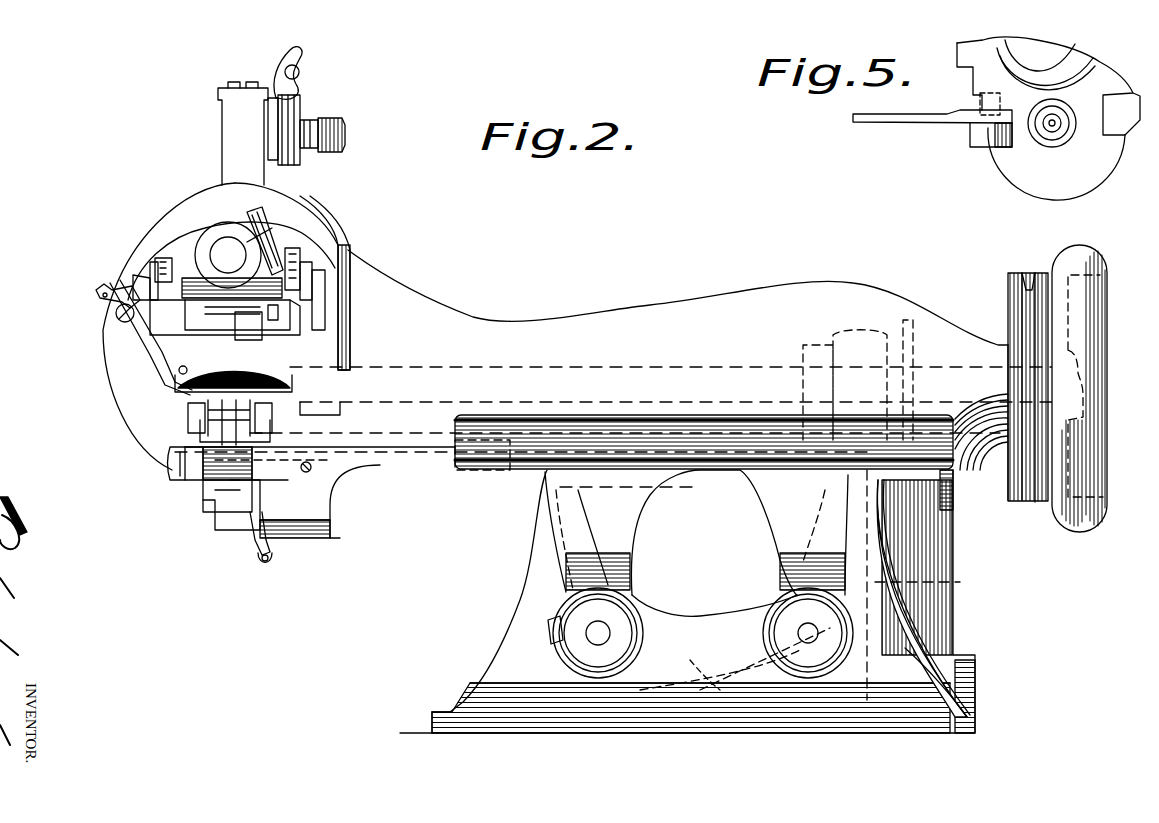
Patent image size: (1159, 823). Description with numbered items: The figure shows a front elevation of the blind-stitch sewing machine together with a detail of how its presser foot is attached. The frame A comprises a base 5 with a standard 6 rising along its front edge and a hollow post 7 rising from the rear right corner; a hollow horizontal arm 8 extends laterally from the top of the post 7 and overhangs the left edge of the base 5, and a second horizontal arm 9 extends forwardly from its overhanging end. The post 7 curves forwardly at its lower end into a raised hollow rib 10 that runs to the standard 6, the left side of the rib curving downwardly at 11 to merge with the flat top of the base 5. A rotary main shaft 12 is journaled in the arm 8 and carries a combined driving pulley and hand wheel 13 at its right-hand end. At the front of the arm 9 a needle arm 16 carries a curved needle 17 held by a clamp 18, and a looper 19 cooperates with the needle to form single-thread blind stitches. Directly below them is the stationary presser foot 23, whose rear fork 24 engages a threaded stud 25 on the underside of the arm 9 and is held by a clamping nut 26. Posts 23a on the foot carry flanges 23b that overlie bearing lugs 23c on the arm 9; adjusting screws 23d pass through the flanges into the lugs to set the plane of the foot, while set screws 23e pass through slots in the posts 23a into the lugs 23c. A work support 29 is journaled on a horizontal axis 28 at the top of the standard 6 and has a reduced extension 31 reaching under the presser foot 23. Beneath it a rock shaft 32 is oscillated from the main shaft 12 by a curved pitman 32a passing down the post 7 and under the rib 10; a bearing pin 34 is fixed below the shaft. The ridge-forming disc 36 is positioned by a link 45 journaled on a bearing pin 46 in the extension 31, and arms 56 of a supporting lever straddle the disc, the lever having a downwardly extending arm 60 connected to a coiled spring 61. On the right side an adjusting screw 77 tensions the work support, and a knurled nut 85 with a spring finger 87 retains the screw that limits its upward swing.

In FIG. 2, the frame A is at (746, 316).
In FIG. 2, the base 5 is at (442, 714).
In FIG. 2, the standard 6 is at (534, 562).
In FIG. 2, the post 7 is at (945, 548).
In FIG. 2, the horizontal arm 8 is at (612, 318).
In FIG. 2, the horizontal arm 9 is at (298, 222).
In FIG. 5, the horizontal arm 9 is at (1106, 56).
In FIG. 2, the rib like structure 10 is at (928, 634).
In FIG. 2, the downwardly curved side of rib 11 is at (720, 688).
In FIG. 2, the rotary main shaft 12 is at (642, 365).
In FIG. 2, the combined driving pulley and hand wheel 13 is at (1086, 268).
In FIG. 2, the needle arm 16 is at (170, 238).
In FIG. 2, the curved needle 17 is at (140, 376).
In FIG. 2, the clamp 18 is at (122, 299).
In FIG. 2, the looper 19 is at (150, 358).
In FIG. 2, the presser foot 23 is at (215, 364).
In FIG. 2, the posts 23a is at (150, 347).
In FIG. 2, the flanges 23b is at (150, 262).
In FIG. 2, the bearing lugs 23c is at (135, 282).
In FIG. 2, the adjusting screws 23d is at (158, 236).
In FIG. 2, the set screws 23e is at (290, 318).
In FIG. 5, the fork 24 is at (958, 122).
In FIG. 5, the threaded stud 25 is at (978, 100).
In FIG. 2, the clamping nut 26 is at (300, 408).
In FIG. 5, the clamping nut 26 is at (990, 147).
In FIG. 2, the horizontal axis 28 is at (465, 436).
In FIG. 2, the work support 29 is at (732, 410).
In FIG. 2, the reduced extension 31 is at (310, 490).
In FIG. 2, the rock shaft 32 is at (437, 455).
In FIG. 2, the curved pitman 32a is at (960, 582).
In FIG. 2, the bearing pin 34 is at (325, 528).
In FIG. 2, the disc 36 is at (222, 470).
In FIG. 2, the link 45 is at (198, 433).
In FIG. 2, the bearing pin 46 is at (166, 462).
In FIG. 2, the arms 56 is at (190, 412).
In FIG. 2, the downwardly extending arm 60 is at (258, 545).
In FIG. 2, the coiled spring 61 is at (262, 565).
In FIG. 2, the adjusting screw 77 is at (800, 648).
In FIG. 2, the knurled nut 85 is at (648, 640).
In FIG. 2, the spring finger 87 is at (548, 636).